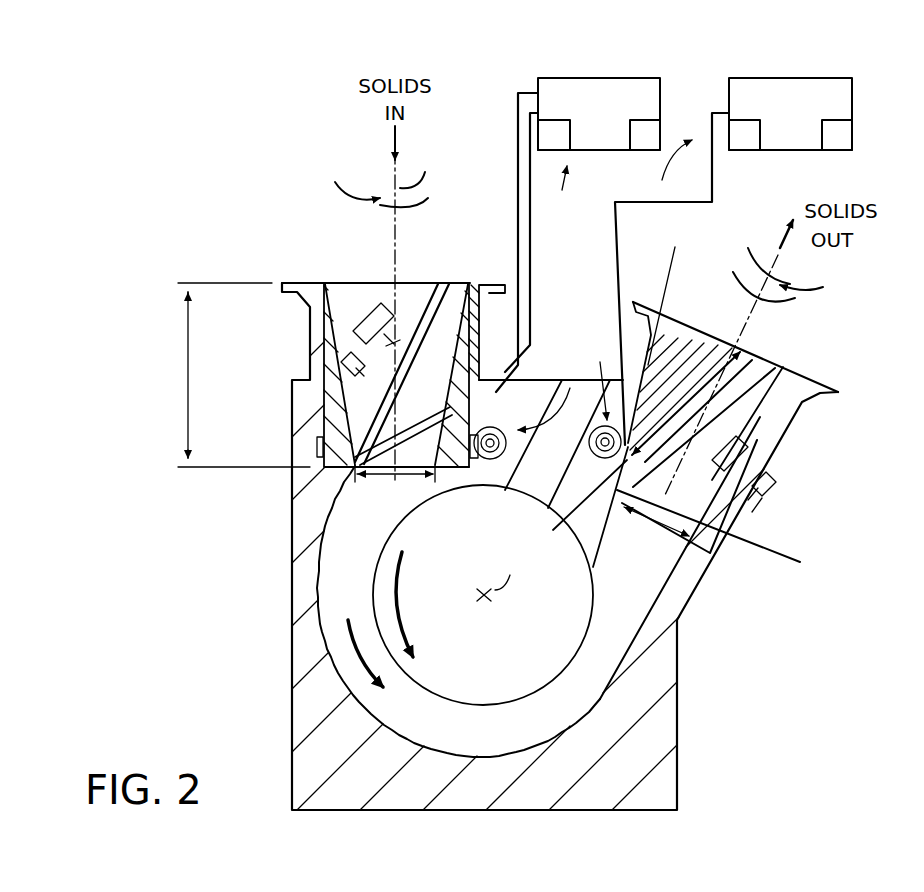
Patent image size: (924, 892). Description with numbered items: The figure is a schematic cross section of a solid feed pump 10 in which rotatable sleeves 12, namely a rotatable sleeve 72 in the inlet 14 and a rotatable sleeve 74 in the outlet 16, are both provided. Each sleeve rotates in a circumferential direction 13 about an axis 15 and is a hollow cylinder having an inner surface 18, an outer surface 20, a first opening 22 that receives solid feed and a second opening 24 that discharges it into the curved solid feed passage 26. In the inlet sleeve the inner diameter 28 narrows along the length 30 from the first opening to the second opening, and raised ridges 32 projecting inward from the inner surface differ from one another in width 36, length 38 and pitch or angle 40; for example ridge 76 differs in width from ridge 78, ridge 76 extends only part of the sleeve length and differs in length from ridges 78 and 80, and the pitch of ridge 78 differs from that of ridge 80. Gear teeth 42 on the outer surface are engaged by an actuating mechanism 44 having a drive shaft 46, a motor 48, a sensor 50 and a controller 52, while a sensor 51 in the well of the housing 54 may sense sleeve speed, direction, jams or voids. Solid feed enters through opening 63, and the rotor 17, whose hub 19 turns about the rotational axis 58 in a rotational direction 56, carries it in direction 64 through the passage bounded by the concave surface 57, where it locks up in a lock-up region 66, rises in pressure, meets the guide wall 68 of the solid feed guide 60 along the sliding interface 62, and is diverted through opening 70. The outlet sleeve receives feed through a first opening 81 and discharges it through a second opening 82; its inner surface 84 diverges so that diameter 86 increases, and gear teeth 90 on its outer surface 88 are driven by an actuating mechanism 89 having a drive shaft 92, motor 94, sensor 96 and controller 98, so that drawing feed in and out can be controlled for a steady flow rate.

The solid feed pump 10 is at (278, 236).
The rotatable sleeve 12 is at (458, 283).
The circumferential direction 13 is at (587, 226).
The inlet 14 is at (288, 283).
The axis 15 is at (587, 223).
The outlet 16 is at (838, 392).
The rotor 17 is at (530, 680).
The inner surface 18 is at (462, 283).
The hub 19 is at (480, 706).
The outer surface 20 is at (500, 340).
The first opening 22 is at (335, 283).
The second opening 24 is at (373, 485).
The solid feed passage 26 is at (343, 587).
The inner diameter 28 is at (412, 478).
The length 30 is at (188, 372).
The raised ridges 32 is at (331, 355).
The width 36 is at (343, 357).
The length 38 is at (396, 283).
The pitch or angle 40 is at (380, 485).
The gear teeth 42 is at (318, 445).
The actuating mechanism 44 is at (544, 271).
The drive shaft 46 is at (502, 460).
The motor 48 is at (637, 78).
The sensor 50 is at (652, 120).
The sensor 51 is at (474, 395).
The controller 52 is at (570, 135).
The housing 54 is at (292, 698).
The rotational direction 56 is at (393, 602).
The concave surface 57 is at (450, 755).
The rotational axis 58 is at (499, 572).
The solid feed guide 60 is at (610, 545).
The sliding interface 62 is at (575, 545).
The opening 63 is at (443, 283).
The direction 64 is at (320, 640).
The lock-up region 66 is at (410, 740).
The guide wall 68 is at (600, 575).
The opening 70 is at (790, 355).
The rotatable sleeve 72 is at (367, 283).
The rotatable sleeve 74 is at (805, 372).
The ridge 76 is at (386, 283).
The ridge 78 is at (370, 447).
The ridge 80 is at (506, 310).
The first opening 81 is at (748, 540).
The second opening 82 is at (800, 350).
The inner surface 84 is at (669, 295).
The diameter 86 is at (720, 548).
The outer surface 88 is at (635, 330).
The actuating mechanism 89 is at (657, 279).
The gear teeth 90 is at (752, 505).
The drive shaft 92 is at (565, 505).
The motor 94 is at (824, 78).
The sensor 96 is at (845, 120).
The controller 98 is at (760, 135).